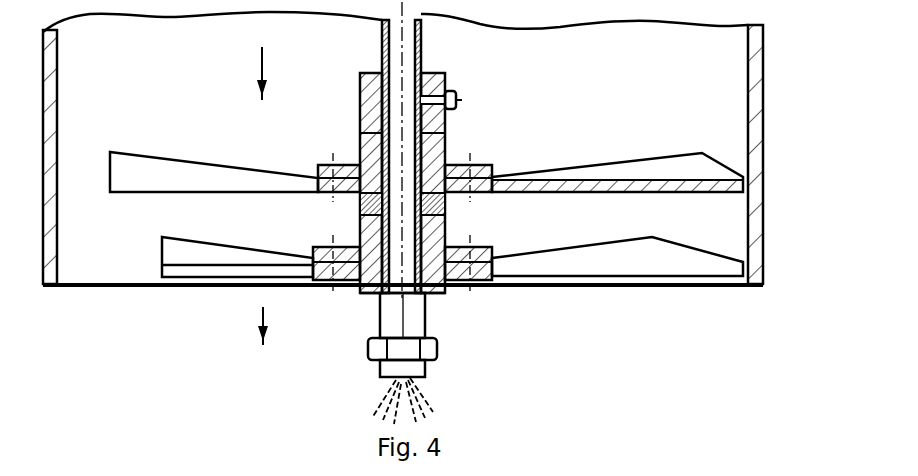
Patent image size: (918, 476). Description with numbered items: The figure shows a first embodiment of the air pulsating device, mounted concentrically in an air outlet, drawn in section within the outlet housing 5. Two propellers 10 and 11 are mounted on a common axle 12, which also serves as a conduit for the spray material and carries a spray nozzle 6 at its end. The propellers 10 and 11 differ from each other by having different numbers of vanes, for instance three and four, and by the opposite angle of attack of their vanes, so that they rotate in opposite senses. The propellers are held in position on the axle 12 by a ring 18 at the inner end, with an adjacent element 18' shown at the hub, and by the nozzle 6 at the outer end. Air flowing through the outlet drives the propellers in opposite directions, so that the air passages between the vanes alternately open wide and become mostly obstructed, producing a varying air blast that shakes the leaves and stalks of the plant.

The tank 5 is at (757, 252).
The spray nozzle 6 is at (417, 322).
The propeller 10 is at (662, 248).
The propeller 11 is at (675, 167).
The common axle 12 is at (382, 51).
The ring 18 is at (467, 85).
The seal ring 18' is at (442, 210).